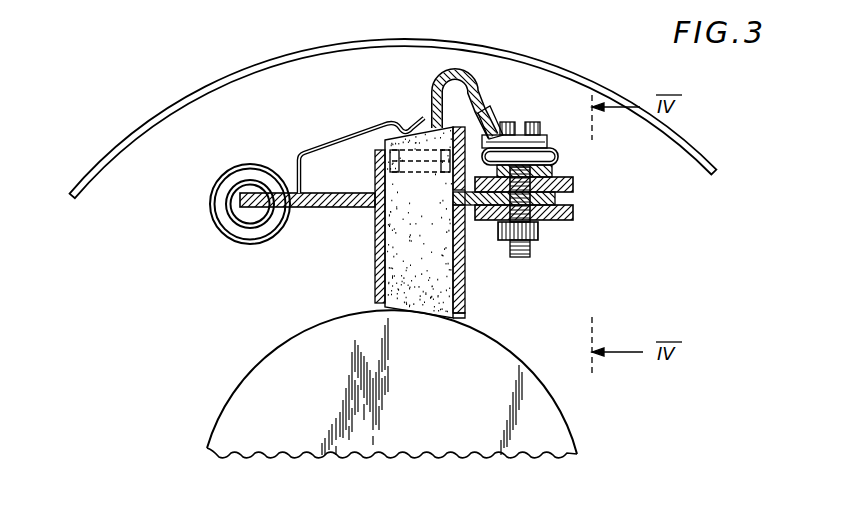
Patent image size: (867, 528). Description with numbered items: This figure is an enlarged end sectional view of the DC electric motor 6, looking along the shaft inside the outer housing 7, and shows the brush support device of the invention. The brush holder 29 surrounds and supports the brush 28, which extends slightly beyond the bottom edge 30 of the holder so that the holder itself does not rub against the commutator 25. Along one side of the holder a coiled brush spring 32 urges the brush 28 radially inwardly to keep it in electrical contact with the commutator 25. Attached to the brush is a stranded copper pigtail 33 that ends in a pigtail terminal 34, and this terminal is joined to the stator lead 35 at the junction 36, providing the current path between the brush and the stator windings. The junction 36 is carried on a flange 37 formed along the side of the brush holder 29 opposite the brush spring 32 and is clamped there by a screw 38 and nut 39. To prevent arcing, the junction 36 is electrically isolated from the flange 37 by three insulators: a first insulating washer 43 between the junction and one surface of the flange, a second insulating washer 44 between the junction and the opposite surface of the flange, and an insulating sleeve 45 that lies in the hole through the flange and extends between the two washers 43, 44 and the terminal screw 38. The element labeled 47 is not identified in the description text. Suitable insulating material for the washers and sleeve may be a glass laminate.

The DC electric motor 6 is at (569, 62).
The outer housing 7 is at (305, 48).
The commutator 25 is at (292, 340).
The brush 28 is at (382, 265).
The brush holder 29 is at (375, 230).
The bottom edge 30 is at (462, 313).
The brush spring 32 is at (248, 190).
The pigtail 33 is at (443, 84).
The pigtail terminal 34 is at (496, 118).
The stator lead 35 is at (560, 155).
The junction 36 is at (570, 229).
The flange 37 is at (478, 222).
The screw 38 is at (541, 125).
The nut 39 is at (540, 235).
The first insulator 43 is at (576, 180).
The second insulator 44 is at (576, 211).
The third insulator 45 is at (574, 197).
The insulating block 47 is at (452, 186).